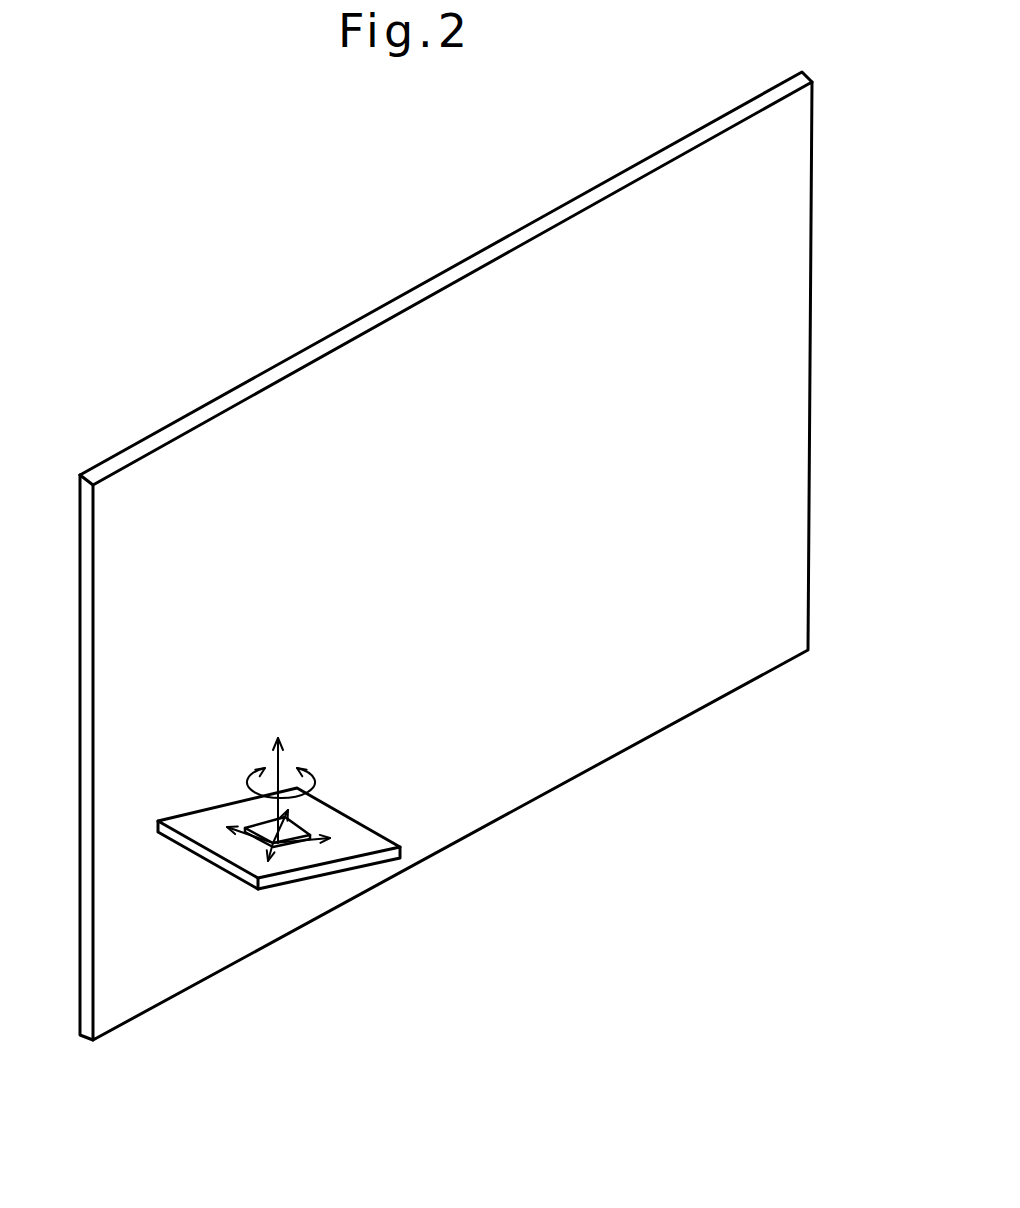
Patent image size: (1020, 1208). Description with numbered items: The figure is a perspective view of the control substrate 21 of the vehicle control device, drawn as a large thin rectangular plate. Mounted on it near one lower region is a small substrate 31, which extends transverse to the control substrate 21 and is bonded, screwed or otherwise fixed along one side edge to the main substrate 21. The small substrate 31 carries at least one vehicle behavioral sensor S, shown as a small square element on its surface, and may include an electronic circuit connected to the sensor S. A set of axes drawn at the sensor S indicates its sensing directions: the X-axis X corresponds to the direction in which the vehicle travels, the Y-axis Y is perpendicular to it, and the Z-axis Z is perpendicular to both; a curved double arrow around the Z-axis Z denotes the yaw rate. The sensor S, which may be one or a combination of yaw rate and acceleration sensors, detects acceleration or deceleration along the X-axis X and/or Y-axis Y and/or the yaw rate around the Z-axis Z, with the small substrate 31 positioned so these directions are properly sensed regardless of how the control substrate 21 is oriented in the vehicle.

The control substrate 21 is at (787, 430).
The small substrate 31 is at (365, 838).
The vehicle behavioral sensor S is at (245, 828).
The X-axis X is at (318, 837).
The Y-axis Y is at (276, 847).
The Z-axis Z is at (281, 772).